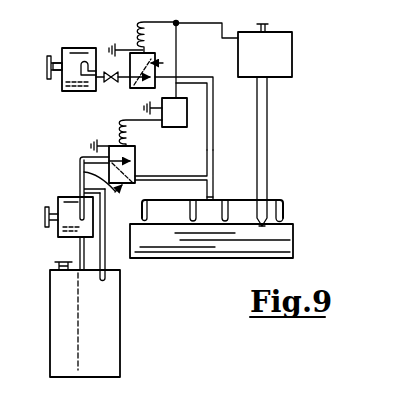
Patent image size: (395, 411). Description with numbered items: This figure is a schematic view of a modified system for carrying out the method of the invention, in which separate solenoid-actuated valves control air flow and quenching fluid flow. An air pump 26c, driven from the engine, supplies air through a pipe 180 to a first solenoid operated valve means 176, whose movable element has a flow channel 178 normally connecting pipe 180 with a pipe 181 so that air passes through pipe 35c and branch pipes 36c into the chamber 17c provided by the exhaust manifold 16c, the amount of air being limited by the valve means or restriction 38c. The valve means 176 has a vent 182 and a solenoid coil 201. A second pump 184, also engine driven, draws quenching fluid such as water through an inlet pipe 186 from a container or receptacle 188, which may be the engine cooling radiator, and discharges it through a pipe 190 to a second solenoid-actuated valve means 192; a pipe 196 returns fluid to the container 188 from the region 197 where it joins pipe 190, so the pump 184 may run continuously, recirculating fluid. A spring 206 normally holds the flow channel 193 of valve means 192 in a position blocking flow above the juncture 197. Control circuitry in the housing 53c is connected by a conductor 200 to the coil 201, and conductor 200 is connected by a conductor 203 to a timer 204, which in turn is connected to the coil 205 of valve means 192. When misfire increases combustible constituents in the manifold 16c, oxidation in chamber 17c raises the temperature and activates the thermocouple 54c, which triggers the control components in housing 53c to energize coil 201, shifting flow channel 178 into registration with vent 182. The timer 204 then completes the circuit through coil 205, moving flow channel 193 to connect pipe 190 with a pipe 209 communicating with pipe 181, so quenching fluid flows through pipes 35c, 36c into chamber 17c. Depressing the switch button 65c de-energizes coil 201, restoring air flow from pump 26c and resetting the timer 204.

The air pump 26c is at (62, 48).
The pipe 180 is at (80, 67).
The valve means or restriction 38c is at (98, 78).
The flow channel 178 is at (134, 84).
The first solenoid operated valve means 176 is at (152, 51).
The solenoid coil 201 is at (136, 33).
The conductor 200 is at (222, 22).
The conductor 203 is at (178, 58).
The vent 182 is at (161, 63).
The housing 53c is at (310, 10).
The switch button 65c is at (274, 3).
The timer 204 is at (188, 111).
The pipe 181 is at (214, 114).
The second solenoid-actuated valve means 192 is at (208, 148).
The pipe 209 is at (220, 196).
The coil 205 is at (116, 128).
The pipe 190 is at (80, 160).
The flow channel 193 is at (137, 161).
The spring 206 is at (84, 172).
The region or juncture 197 is at (78, 190).
The second pump 184 is at (57, 237).
The inlet pipe 186 is at (77, 257).
The container or receptacle 188 is at (120, 357).
The pipe 196 is at (103, 268).
The pipe 35c is at (268, 159).
The branch pipes 36c is at (284, 218).
The exhaust manifold 16c is at (226, 259).
The chamber 17c is at (268, 244).
The thermo-responsive means or thermocouple 54c is at (257, 231).